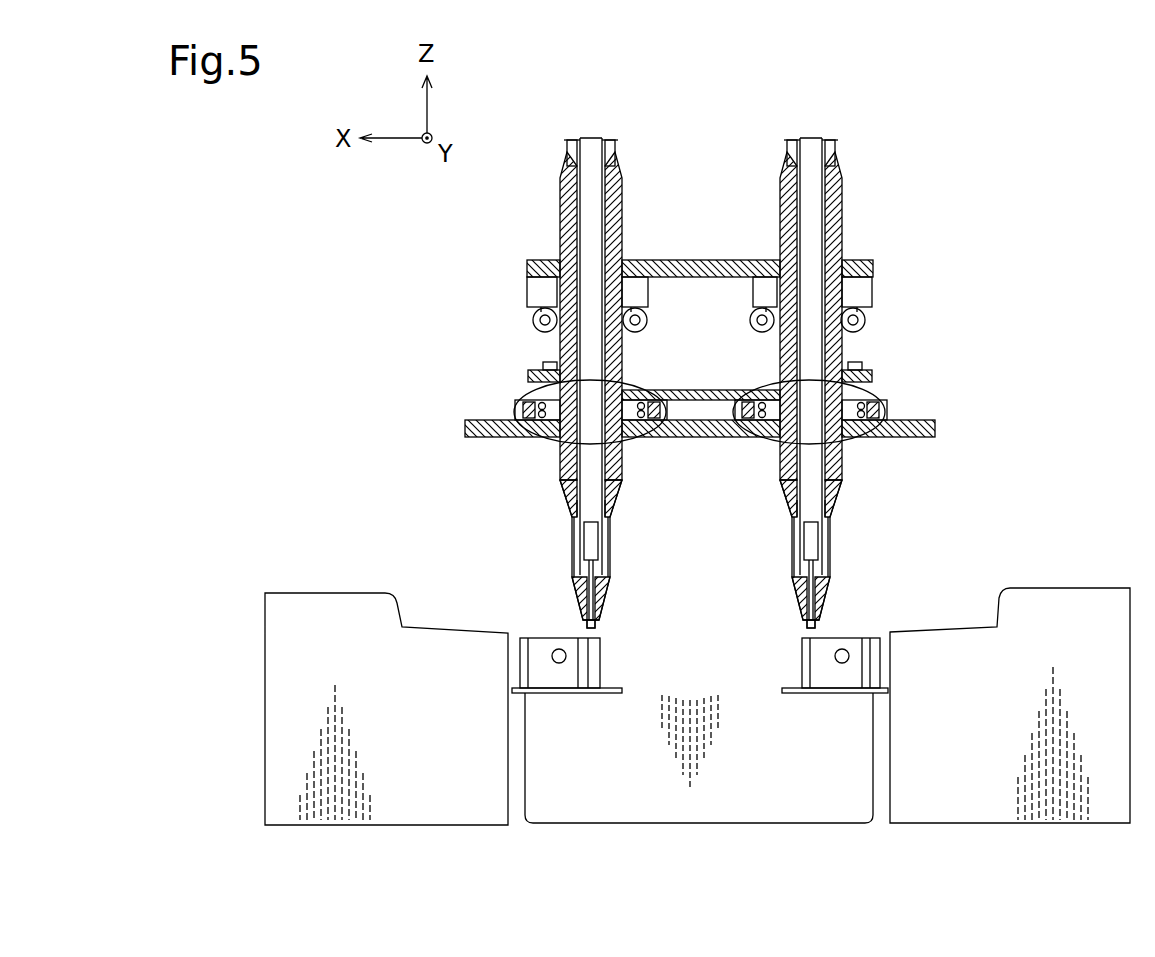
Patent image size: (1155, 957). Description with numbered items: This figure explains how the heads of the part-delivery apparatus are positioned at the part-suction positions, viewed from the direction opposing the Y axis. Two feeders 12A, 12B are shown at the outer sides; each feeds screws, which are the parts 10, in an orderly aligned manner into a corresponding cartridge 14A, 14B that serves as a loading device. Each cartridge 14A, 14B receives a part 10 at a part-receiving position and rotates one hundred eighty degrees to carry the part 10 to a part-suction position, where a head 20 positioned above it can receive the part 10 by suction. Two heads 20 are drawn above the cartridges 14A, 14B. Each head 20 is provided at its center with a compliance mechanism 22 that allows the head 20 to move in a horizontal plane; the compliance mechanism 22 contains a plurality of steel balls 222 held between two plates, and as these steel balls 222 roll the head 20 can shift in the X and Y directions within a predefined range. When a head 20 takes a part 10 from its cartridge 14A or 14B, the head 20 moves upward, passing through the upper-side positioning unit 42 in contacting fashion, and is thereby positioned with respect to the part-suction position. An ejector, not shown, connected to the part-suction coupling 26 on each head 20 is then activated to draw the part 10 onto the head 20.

The part 10 is at (585, 625).
The feeder 12A is at (983, 805).
The feeder 12B is at (417, 810).
The cartridge 14A is at (825, 675).
The cartridge 14B is at (560, 682).
The head 20 is at (778, 200).
The compliance mechanism 22 is at (565, 440).
The steel balls 222 is at (516, 408).
The part-suction coupling 26 is at (532, 372).
The upper-side positioning unit 42 is at (646, 324).